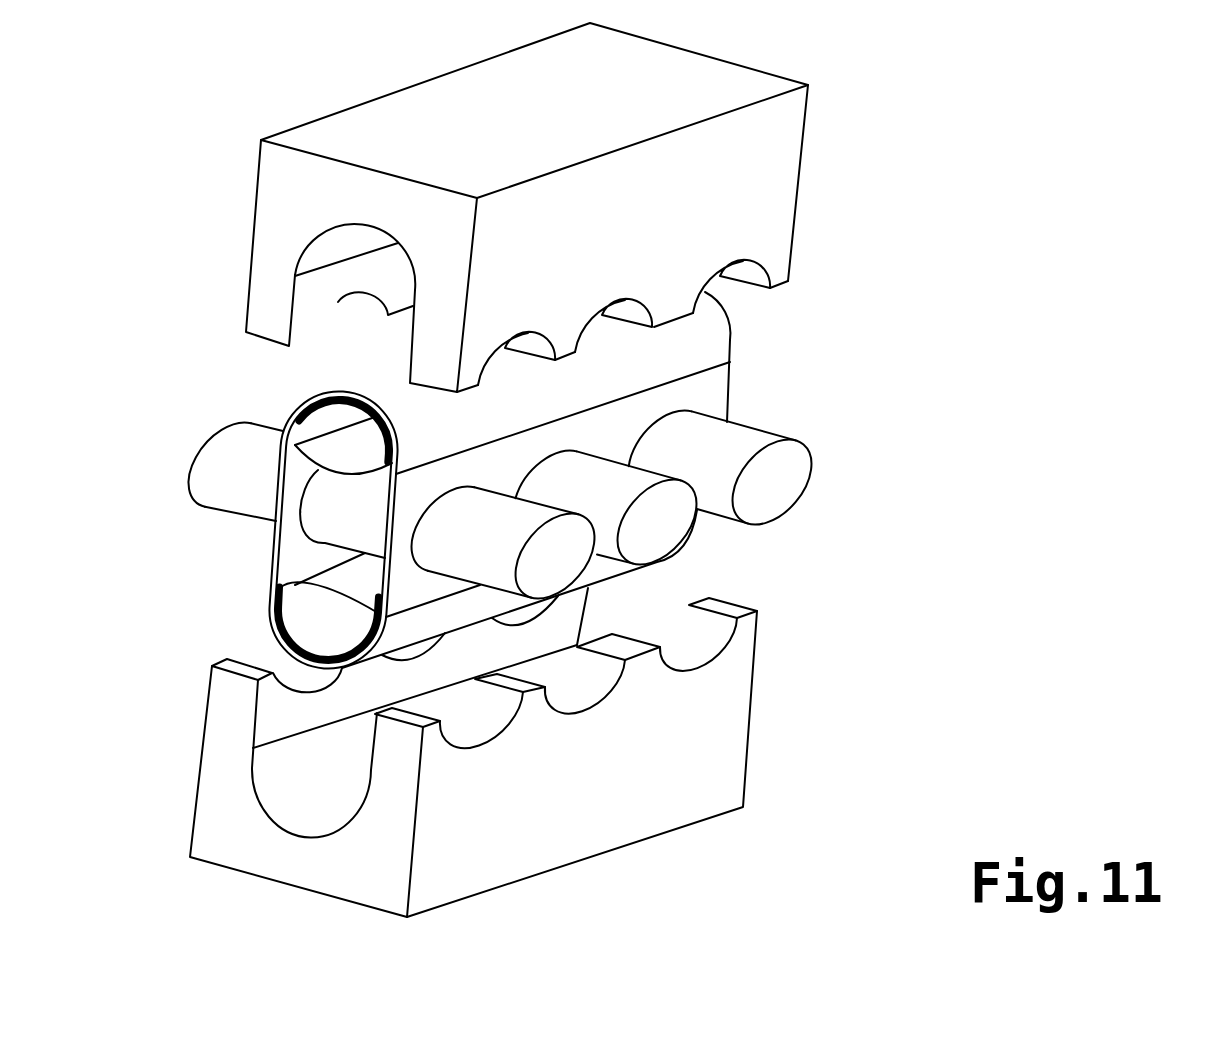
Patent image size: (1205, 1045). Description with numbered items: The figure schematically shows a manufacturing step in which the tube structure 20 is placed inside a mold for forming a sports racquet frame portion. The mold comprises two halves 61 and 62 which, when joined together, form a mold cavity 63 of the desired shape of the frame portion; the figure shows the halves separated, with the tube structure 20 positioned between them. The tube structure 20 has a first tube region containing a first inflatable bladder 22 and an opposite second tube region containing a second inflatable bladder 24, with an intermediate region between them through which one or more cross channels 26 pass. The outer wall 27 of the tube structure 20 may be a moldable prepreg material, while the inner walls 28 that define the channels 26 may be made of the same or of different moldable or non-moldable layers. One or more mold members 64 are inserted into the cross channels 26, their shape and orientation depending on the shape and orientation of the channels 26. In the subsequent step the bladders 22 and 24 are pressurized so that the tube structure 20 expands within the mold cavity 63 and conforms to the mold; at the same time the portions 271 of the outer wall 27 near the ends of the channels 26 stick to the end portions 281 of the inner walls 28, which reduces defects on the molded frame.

The tube structure 20 is at (267, 571).
The first inflatable bladder 22 is at (311, 428).
The second inflatable bladder 24 is at (314, 619).
The cross channels 26 is at (454, 484).
The outer wall 27 is at (735, 343).
The inner walls 28 is at (316, 519).
The mold half 61 is at (772, 151).
The mold half 62 is at (725, 713).
The mold cavity 63 is at (291, 236).
The mold members 64 is at (735, 451).
The portions of the outer wall 271 is at (302, 467).
The end portions of the inner walls 281 is at (313, 501).